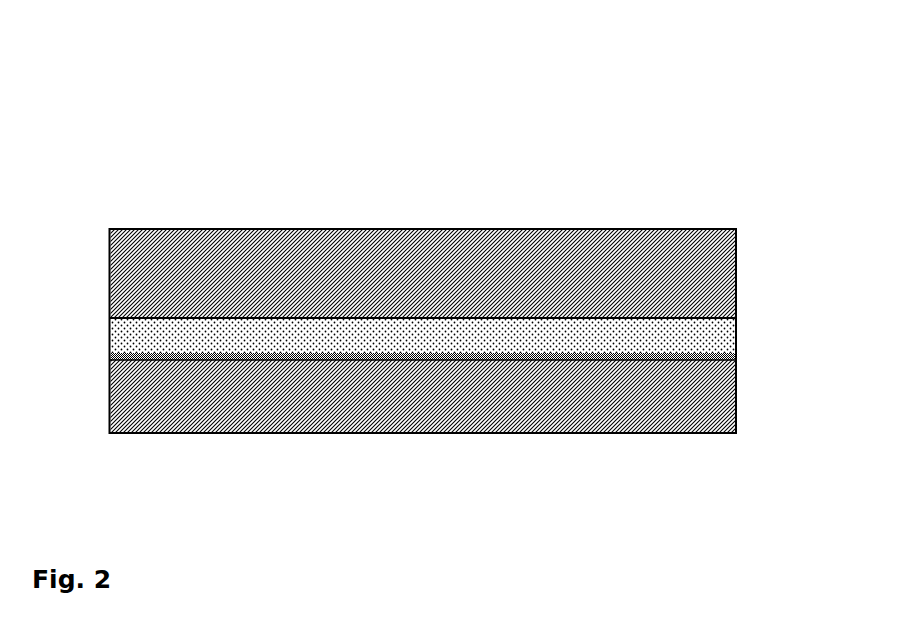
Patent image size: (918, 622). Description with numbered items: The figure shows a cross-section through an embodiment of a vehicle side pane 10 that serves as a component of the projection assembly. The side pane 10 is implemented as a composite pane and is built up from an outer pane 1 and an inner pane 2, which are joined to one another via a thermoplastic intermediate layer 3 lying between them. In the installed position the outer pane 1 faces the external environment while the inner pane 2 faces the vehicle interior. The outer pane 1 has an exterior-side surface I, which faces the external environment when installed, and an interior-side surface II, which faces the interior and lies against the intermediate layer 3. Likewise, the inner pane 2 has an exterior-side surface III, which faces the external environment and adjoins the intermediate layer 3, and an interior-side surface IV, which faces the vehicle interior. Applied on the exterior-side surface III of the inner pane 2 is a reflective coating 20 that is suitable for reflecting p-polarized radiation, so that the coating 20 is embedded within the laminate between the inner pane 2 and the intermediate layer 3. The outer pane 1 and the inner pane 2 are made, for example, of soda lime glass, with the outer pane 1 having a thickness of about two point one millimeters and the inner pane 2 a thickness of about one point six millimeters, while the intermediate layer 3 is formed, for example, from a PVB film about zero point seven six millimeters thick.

The vehicle side pane 10 is at (153, 120).
The outer pane 1 is at (680, 248).
The inner pane 2 is at (690, 400).
The thermoplastic intermediate layer 3 is at (713, 338).
The reflective coating 20 is at (120, 350).
The exterior-side surface I is at (313, 226).
The interior-side surface II is at (350, 312).
The exterior-side surface III is at (211, 363).
The interior-side surface IV is at (500, 434).